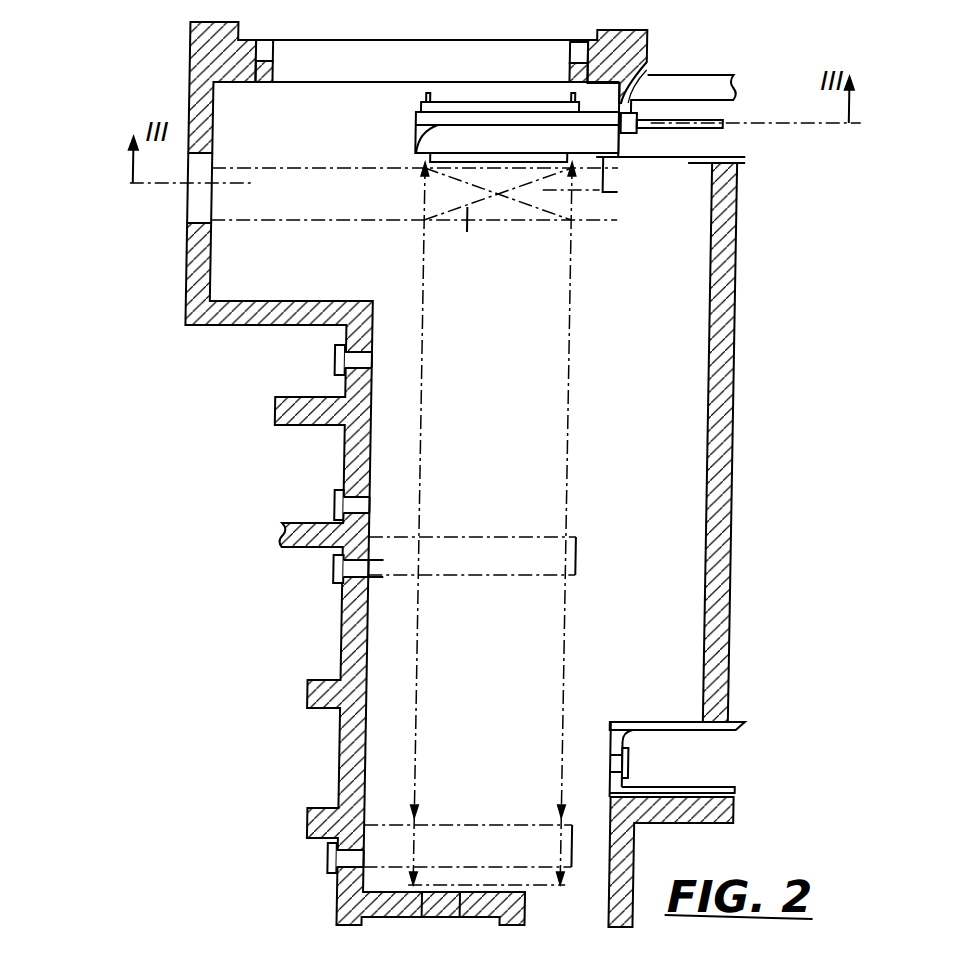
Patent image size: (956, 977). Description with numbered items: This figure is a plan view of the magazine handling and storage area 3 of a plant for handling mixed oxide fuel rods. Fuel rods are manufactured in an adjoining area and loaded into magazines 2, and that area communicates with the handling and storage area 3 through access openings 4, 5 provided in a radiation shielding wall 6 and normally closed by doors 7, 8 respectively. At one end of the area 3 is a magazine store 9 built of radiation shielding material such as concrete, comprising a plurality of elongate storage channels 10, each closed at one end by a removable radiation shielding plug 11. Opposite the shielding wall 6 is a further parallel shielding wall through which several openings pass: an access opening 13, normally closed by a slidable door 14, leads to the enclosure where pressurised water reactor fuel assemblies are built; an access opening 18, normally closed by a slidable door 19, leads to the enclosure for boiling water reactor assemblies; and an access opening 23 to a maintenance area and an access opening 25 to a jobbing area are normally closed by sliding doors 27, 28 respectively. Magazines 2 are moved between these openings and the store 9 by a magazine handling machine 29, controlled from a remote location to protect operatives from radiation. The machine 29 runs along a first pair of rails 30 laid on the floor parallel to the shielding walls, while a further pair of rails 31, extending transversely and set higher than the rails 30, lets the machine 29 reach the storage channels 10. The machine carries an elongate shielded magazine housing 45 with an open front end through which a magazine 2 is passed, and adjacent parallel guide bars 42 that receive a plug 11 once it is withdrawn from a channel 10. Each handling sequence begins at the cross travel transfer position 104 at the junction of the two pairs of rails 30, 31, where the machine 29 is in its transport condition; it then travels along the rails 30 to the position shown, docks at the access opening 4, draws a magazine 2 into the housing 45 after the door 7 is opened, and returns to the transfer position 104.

The magazine 2 is at (699, 96).
The magazine handling and storage area 3 is at (700, 233).
The access opening 4 is at (644, 66).
The access opening 5 is at (660, 804).
The radiation shielding wall 6 is at (754, 442).
The door 7 is at (671, 165).
The door 8 is at (648, 730).
The magazine store 9 is at (415, 119).
The storage channel 10 is at (365, 47).
The radiation shielding plug 11 is at (364, 75).
The access opening 13 is at (454, 828).
The slidable door 14 is at (293, 865).
The access opening 18 is at (459, 574).
The slidable door 19 is at (299, 572).
The access opening 23 is at (381, 489).
The access opening 25 is at (383, 377).
The sliding door 27 is at (300, 498).
The sliding door 28 is at (302, 359).
The magazine handling machine 29 is at (476, 127).
The first pair of rails 30 is at (492, 523).
The further pair of rails 31 is at (414, 215).
The guide bars 42 is at (642, 187).
The magazine housing 45 is at (384, 139).
The cross travel transfer position 104 is at (499, 235).